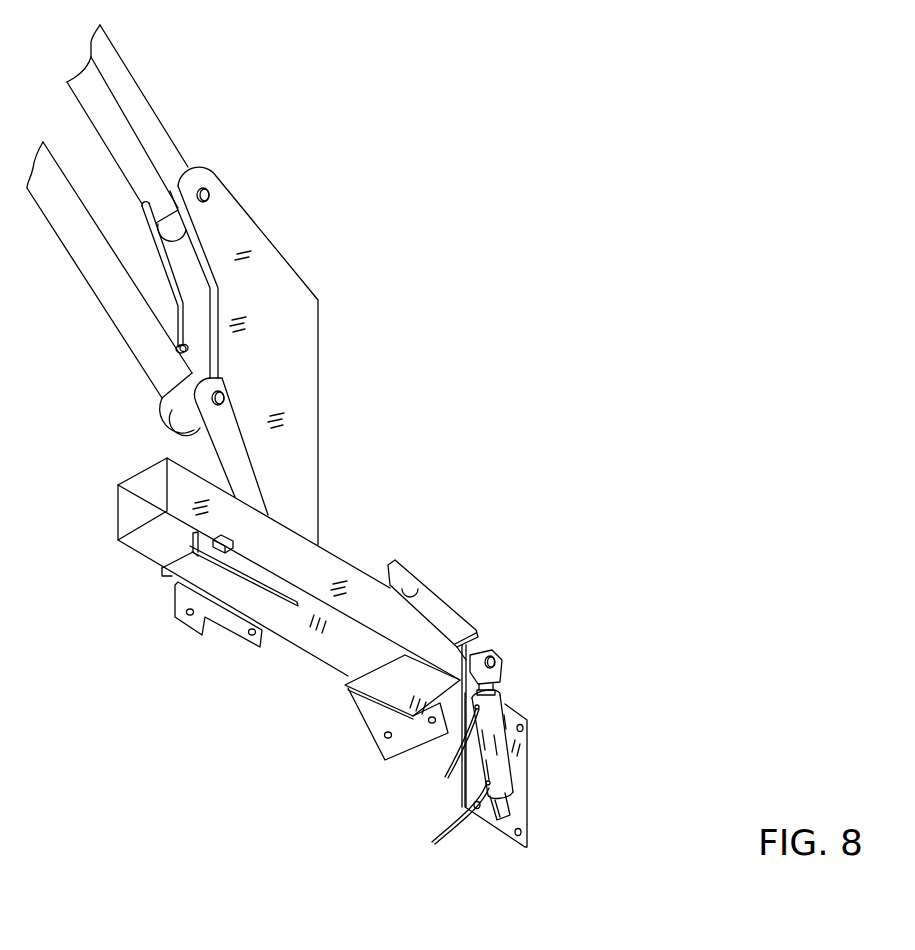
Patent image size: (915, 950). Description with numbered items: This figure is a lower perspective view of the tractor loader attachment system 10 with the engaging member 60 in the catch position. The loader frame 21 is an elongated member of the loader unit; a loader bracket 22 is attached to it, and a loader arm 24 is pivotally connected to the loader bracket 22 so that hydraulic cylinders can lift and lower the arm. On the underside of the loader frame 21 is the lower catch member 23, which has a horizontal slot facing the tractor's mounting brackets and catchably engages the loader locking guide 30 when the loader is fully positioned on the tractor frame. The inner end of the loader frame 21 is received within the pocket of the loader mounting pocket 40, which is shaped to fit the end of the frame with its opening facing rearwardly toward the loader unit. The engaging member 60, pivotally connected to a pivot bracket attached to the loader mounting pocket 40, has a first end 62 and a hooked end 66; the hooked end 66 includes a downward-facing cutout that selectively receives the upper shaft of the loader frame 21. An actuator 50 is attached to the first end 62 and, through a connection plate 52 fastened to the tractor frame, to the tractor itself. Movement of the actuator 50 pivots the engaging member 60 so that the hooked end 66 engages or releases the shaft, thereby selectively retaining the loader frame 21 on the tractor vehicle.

The tractor loader attachment system 10 is at (565, 592).
The loader frame 21 is at (303, 635).
The loader bracket 22 is at (268, 332).
The lower catch member 23 is at (175, 545).
The loader arm 24 is at (163, 127).
The loader locking guide 30 is at (217, 635).
The loader mounting pocket 40 is at (356, 734).
The actuator 50 is at (512, 765).
The connection plate 52 is at (528, 808).
The engaging member 60 is at (460, 614).
The first end 62 is at (476, 657).
The hooked end 66 is at (388, 566).